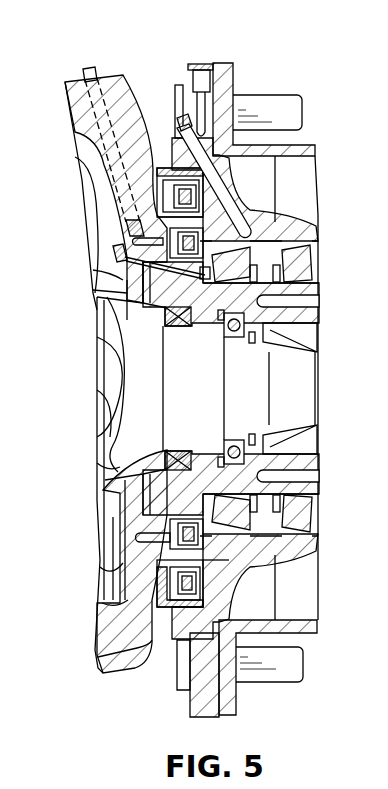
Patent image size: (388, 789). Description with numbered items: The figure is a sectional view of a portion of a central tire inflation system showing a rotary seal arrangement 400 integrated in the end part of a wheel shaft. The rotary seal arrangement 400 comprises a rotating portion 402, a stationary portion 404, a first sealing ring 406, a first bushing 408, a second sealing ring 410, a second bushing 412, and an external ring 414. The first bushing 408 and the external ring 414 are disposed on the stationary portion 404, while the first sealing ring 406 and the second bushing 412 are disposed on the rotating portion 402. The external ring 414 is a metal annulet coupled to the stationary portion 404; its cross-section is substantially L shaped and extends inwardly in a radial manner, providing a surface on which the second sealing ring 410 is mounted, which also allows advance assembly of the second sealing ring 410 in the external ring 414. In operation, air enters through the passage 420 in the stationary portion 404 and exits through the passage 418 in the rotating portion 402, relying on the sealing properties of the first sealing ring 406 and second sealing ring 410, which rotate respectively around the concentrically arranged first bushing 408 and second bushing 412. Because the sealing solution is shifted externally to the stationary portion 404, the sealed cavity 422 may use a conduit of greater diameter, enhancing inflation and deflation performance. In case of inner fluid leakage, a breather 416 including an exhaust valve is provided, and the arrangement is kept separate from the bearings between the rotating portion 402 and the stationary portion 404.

The rotary seal arrangement 400 is at (194, 363).
The rotating portion 402 is at (225, 63).
The stationary portion 404 is at (126, 84).
The first sealing ring 406 is at (258, 257).
The first bushing 408 is at (283, 272).
The second sealing ring 410 is at (203, 219).
The second bushing 412 is at (203, 573).
The external ring 414 is at (172, 168).
The breather 416 is at (113, 256).
The passage 418 is at (230, 195).
The passage 420 is at (104, 117).
The sealed cavity 422 is at (178, 534).